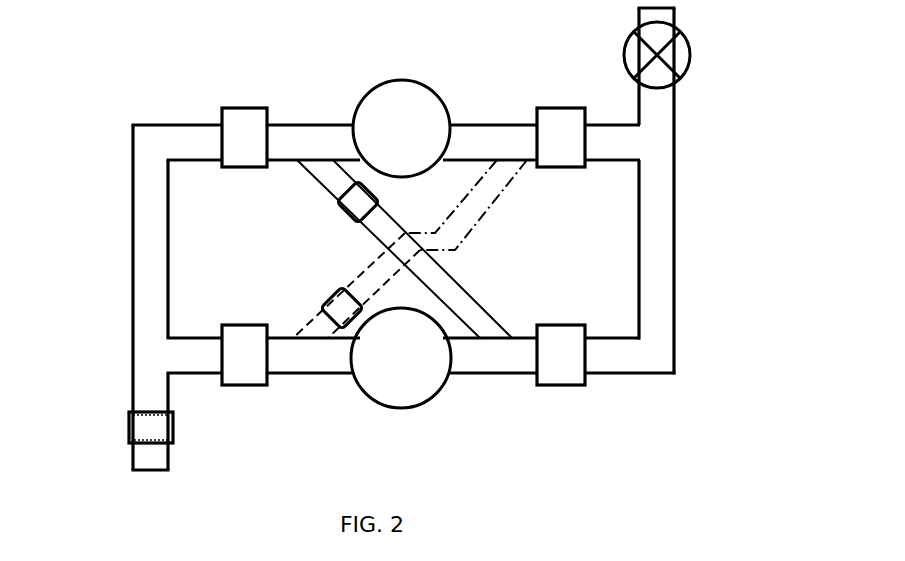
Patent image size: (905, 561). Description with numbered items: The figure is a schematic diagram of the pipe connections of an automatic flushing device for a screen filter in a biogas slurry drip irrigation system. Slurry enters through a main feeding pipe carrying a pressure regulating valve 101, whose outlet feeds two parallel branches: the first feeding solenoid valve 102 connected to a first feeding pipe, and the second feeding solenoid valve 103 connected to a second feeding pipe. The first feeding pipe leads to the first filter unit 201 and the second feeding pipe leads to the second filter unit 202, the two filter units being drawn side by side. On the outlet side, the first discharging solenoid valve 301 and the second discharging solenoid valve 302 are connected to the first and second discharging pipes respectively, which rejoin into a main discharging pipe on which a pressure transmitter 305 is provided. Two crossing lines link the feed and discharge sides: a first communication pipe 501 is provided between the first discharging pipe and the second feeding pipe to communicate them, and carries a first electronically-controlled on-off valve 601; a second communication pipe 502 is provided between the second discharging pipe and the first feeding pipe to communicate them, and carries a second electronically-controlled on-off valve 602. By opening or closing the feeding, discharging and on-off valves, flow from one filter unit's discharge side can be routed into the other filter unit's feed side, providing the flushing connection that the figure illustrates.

The pressure regulating valve 101 is at (680, 60).
The first feeding solenoid valve 102 is at (567, 133).
The second feeding solenoid valve 103 is at (570, 368).
The first filter unit 201 is at (390, 112).
The second filter unit 202 is at (413, 377).
The first discharging solenoid valve 301 is at (242, 128).
The second discharging solenoid valve 302 is at (240, 375).
The pressure transmitter 305 is at (150, 427).
The first communication pipe 501 is at (470, 310).
The second communication pipe 502 is at (500, 170).
The first electronically-controlled on-off valve 601 is at (350, 197).
The second electronically-controlled on-off valve 602 is at (338, 312).